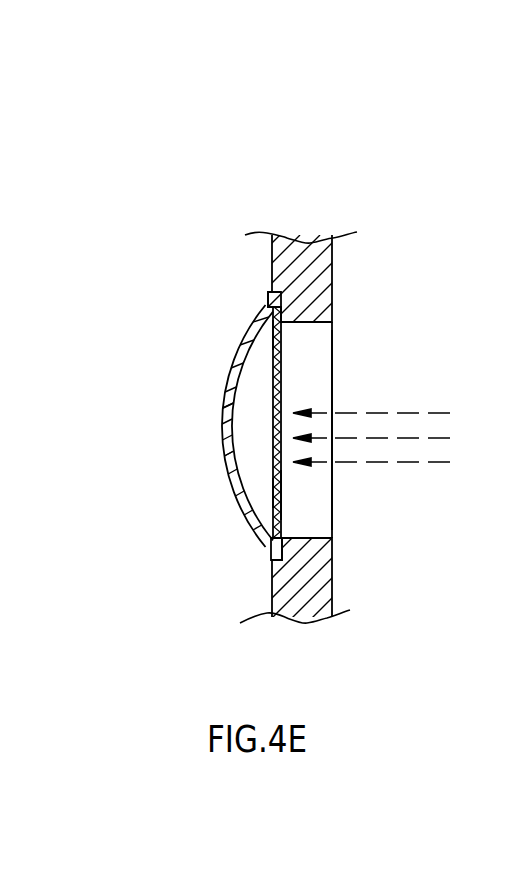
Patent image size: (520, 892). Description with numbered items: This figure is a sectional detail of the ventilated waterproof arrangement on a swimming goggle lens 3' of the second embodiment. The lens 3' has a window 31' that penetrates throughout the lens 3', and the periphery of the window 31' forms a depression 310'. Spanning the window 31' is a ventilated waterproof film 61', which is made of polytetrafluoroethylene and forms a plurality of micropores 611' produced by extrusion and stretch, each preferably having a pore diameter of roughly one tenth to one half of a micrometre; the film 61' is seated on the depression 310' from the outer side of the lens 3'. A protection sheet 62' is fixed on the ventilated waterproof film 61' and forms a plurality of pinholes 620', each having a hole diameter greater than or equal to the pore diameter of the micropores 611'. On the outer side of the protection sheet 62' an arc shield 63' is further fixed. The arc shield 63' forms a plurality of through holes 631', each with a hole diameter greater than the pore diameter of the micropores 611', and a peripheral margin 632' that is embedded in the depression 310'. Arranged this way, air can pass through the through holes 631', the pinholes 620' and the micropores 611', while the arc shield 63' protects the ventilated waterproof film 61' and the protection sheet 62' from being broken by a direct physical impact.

The lens 3' is at (333, 370).
The depression 310' is at (333, 253).
The window 31' is at (384, 430).
The ventilated waterproof film 61' is at (386, 406).
The micropores 611' is at (390, 509).
The protection sheet 62' is at (195, 312).
The arc shield 63' is at (175, 424).
The through holes 631' is at (151, 429).
The peripheral margin 632' is at (194, 424).
The pinholes 620' is at (180, 532).